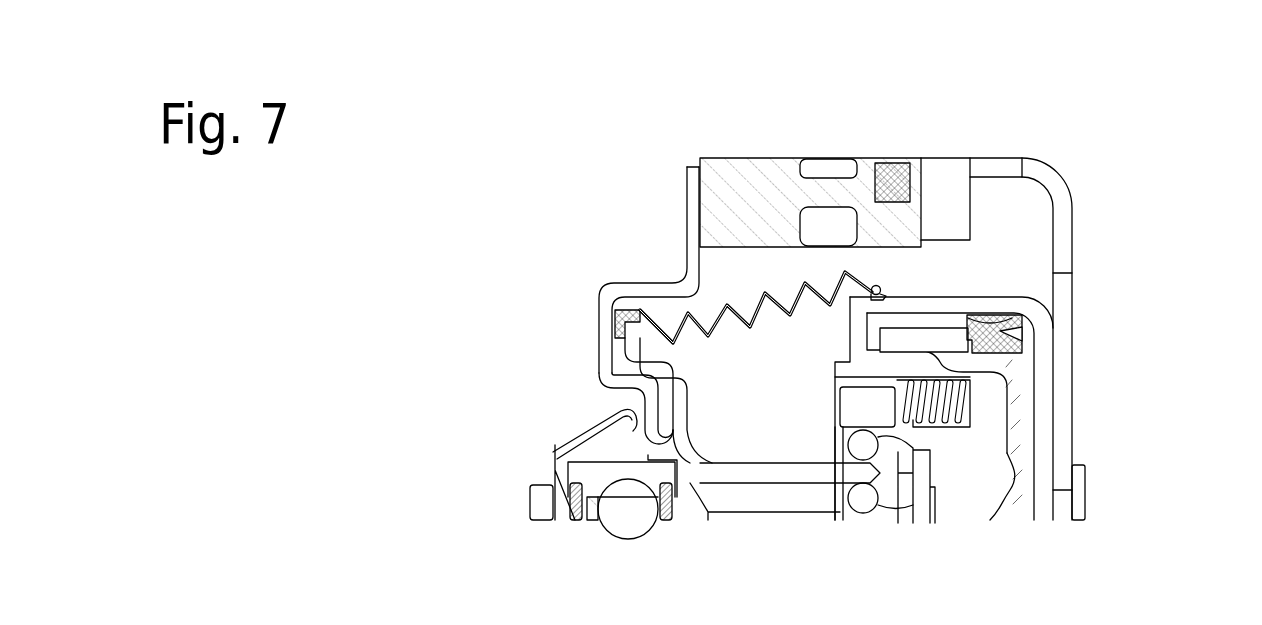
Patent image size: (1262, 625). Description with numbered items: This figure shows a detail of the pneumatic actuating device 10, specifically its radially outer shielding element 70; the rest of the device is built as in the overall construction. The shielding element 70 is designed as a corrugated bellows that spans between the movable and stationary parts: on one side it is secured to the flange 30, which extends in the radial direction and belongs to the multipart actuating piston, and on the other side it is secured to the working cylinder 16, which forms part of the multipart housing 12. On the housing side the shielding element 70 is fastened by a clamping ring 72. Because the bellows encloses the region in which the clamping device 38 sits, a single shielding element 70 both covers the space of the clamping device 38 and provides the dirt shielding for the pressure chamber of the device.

The pneumatic actuating device 10 is at (1110, 209).
The housing 12 is at (1052, 295).
The working cylinder 16 is at (1042, 375).
The flange 30 is at (633, 342).
The clamping device 38 is at (771, 278).
The shielding element 70 is at (712, 318).
The clamping ring 72 is at (875, 285).